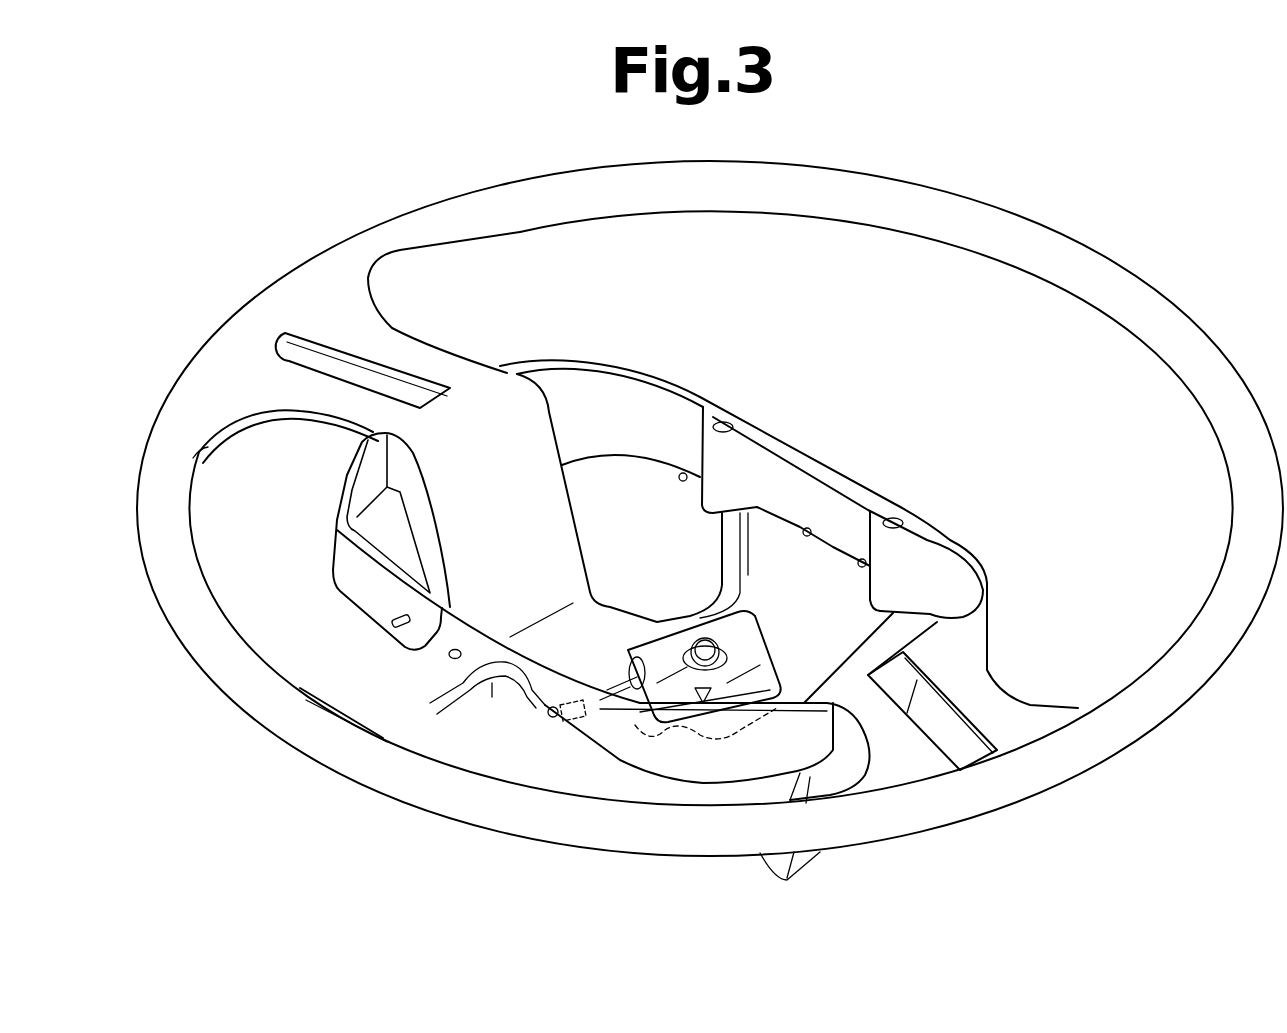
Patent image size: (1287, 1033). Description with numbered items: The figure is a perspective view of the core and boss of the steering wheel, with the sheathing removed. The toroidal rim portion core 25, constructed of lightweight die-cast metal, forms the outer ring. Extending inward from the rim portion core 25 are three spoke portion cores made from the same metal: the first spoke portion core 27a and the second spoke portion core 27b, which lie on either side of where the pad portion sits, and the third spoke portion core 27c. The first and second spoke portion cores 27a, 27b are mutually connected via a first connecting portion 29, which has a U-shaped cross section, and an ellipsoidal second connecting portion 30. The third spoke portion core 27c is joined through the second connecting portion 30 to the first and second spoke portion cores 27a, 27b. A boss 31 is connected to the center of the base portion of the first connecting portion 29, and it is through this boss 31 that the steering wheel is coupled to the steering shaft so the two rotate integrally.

The rim portion core 25 is at (1178, 306).
The first spoke portion core 27a is at (296, 395).
The second spoke portion core 27b is at (992, 684).
The third spoke portion core 27c is at (390, 672).
The first connecting portion 29 is at (550, 498).
The second connecting portion 30 is at (830, 453).
The boss 31 is at (636, 782).